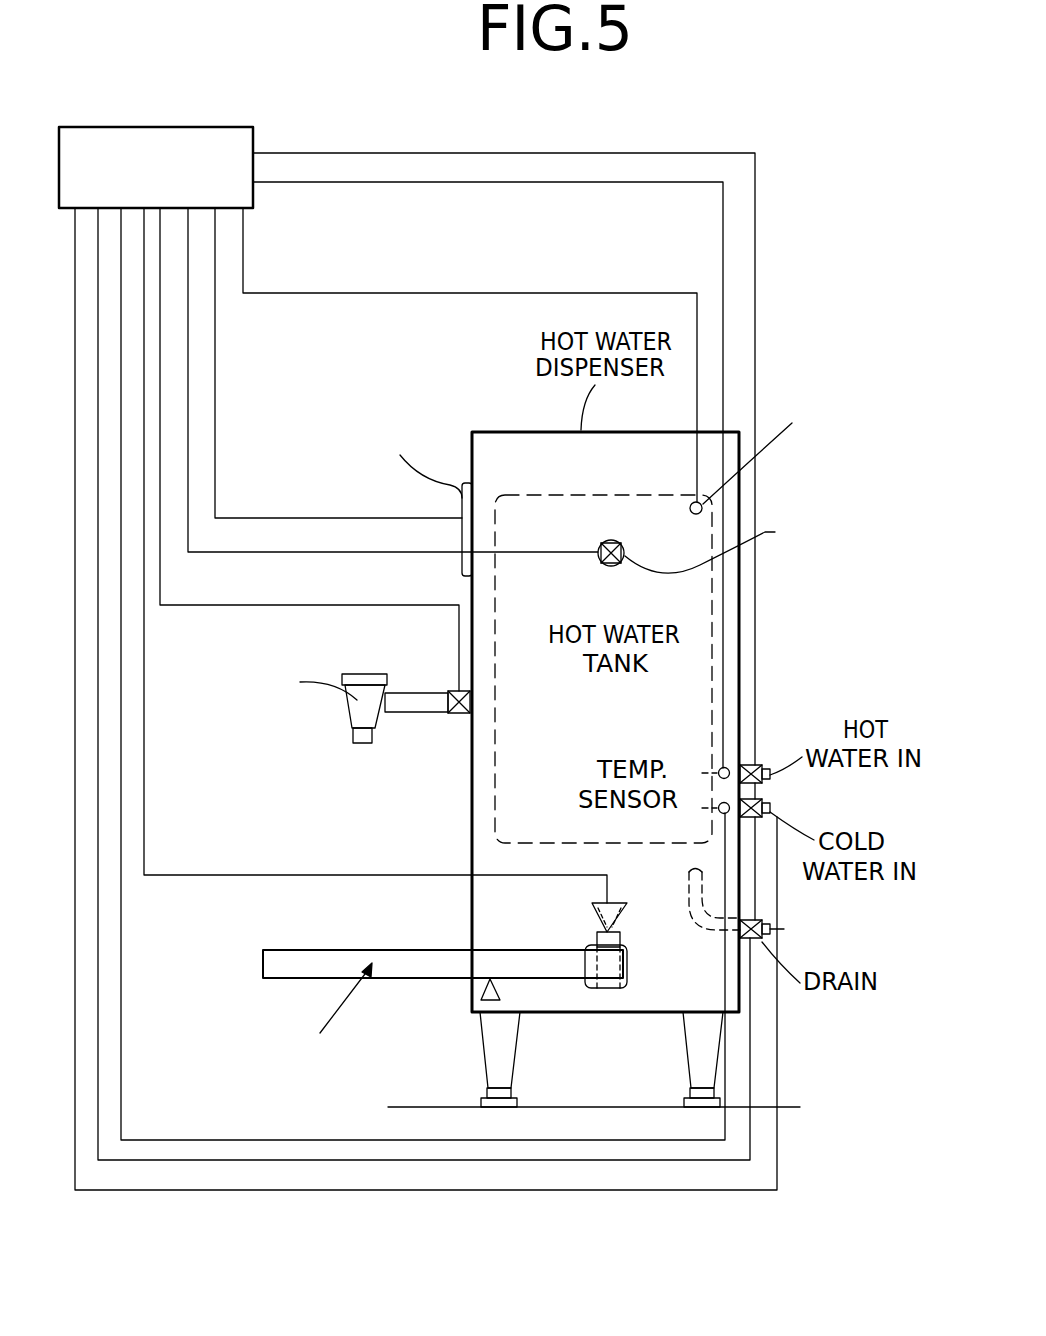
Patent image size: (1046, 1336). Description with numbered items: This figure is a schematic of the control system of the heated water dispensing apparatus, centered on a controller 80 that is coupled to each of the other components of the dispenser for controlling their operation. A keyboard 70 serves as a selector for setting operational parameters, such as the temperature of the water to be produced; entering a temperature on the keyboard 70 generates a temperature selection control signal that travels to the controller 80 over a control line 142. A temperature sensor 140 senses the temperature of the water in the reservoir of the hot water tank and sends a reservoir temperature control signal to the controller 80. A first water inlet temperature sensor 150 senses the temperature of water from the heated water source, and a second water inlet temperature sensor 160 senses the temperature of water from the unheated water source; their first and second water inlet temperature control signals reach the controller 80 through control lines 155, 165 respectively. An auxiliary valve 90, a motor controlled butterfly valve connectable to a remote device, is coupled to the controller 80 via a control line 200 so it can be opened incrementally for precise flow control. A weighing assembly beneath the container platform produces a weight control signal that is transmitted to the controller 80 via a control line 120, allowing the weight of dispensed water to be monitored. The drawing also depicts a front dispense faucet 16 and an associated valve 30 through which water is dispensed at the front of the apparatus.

The controller 80 is at (175, 127).
The control line 142 is at (433, 293).
The control line 155 is at (723, 270).
The keyboard 70 is at (383, 422).
The temperature sensor 140 is at (791, 452).
The auxiliary valve 90 is at (748, 557).
The control line 200 is at (265, 553).
The first water inlet temperature sensor 150 is at (730, 768).
The front dispense faucet 16 is at (352, 720).
The dispense valve 30 is at (455, 718).
The control line 120 is at (150, 877).
The second water inlet temperature sensor 160 is at (728, 816).
The control line 165 is at (123, 1035).